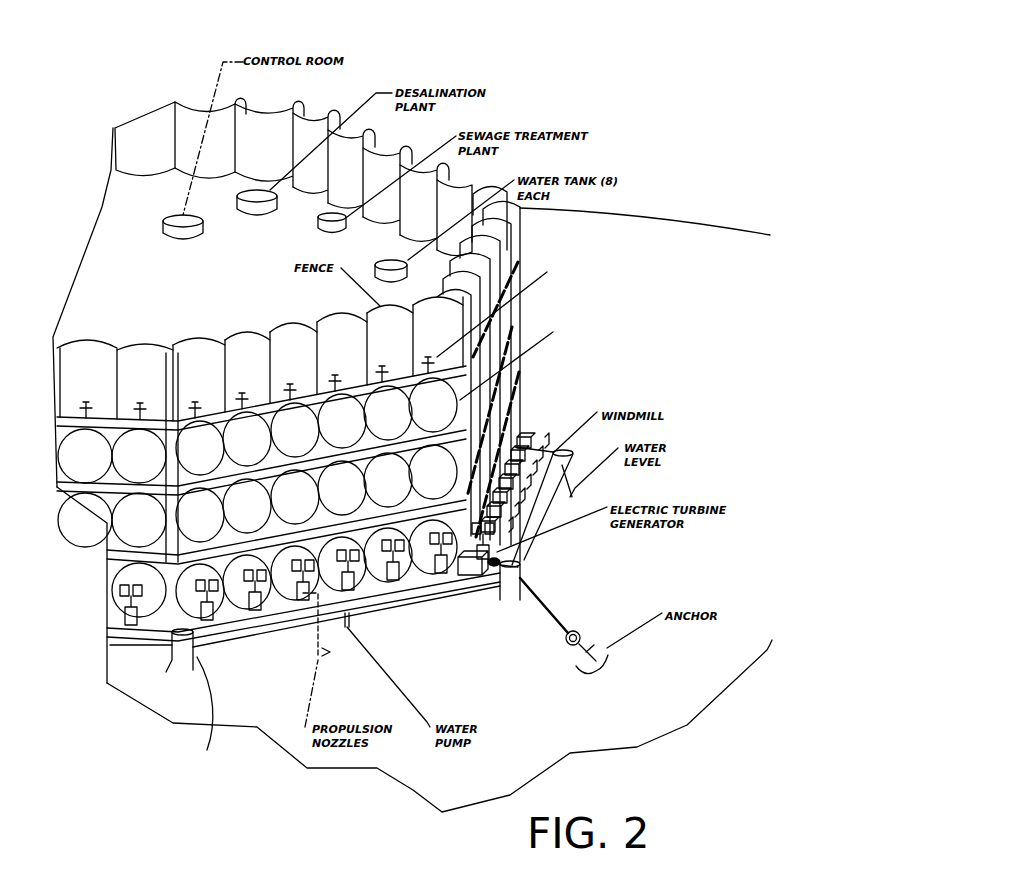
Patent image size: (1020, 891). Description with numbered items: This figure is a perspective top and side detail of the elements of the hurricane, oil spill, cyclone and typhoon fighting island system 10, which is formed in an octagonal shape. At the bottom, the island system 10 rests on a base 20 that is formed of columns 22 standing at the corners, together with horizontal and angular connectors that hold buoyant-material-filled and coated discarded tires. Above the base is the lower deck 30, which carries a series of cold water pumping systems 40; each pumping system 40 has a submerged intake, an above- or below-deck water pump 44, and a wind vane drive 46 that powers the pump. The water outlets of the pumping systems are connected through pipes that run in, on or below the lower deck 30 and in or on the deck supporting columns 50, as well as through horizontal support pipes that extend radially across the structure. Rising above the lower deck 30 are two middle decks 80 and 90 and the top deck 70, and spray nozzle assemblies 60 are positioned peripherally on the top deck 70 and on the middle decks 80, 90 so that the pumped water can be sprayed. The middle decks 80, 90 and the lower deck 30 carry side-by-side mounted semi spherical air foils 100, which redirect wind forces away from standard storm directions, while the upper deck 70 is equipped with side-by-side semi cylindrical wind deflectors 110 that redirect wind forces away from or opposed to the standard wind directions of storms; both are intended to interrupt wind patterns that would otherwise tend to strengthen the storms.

The island system 10 is at (597, 99).
The base 20 is at (169, 671).
The columns 22 is at (215, 720).
The lower deck 30 is at (107, 636).
The cold water pumping systems 40 is at (126, 618).
The water pumps 44 is at (262, 606).
The wind vane drives 46 is at (360, 565).
The deck supporting columns 50 is at (515, 270).
The spray nozzle assemblies 60 is at (603, 271).
The top deck 70 is at (110, 240).
The middle deck 80 is at (82, 488).
The middle deck 90 is at (107, 552).
The semi spherical air foils 100 is at (676, 331).
The semi cylindrical wind deflectors 110 is at (263, 112).